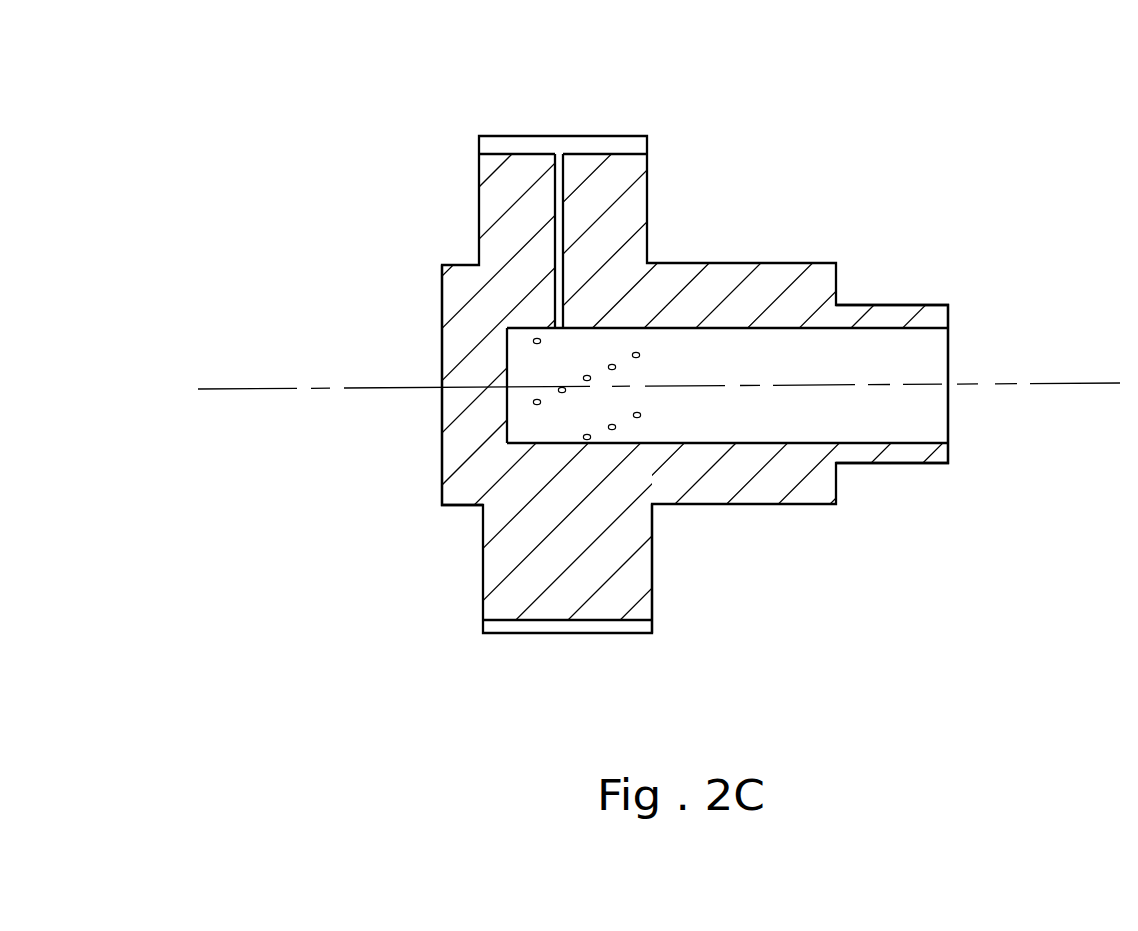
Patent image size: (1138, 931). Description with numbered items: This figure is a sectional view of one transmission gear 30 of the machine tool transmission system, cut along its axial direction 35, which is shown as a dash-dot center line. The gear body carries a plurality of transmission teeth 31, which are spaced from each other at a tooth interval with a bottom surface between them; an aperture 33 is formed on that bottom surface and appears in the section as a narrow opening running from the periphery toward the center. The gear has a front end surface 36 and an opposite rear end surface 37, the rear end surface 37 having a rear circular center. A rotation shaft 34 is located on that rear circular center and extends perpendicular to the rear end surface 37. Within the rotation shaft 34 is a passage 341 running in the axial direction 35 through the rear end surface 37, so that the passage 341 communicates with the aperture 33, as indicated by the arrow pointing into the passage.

The transmission gear 30 is at (330, 146).
The transmission tooth 31 is at (563, 627).
The aperture 33 is at (558, 157).
The rotation shaft 34 is at (883, 318).
The axial direction 35 is at (1045, 382).
The passage 341 is at (903, 411).
The front end surface 36 is at (483, 563).
The rear end surface 37 is at (653, 561).